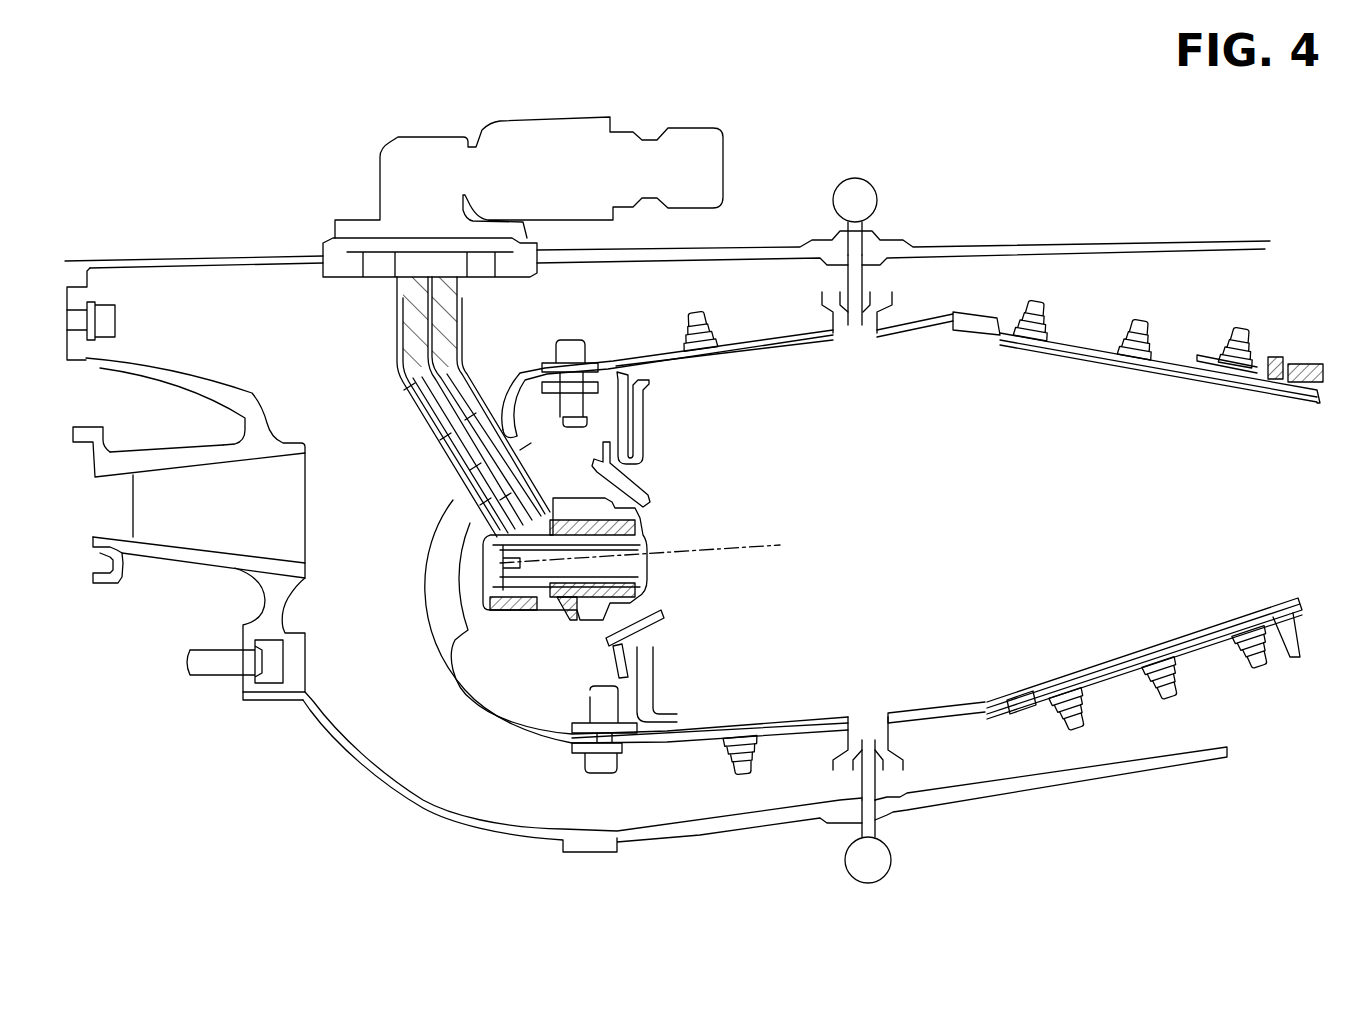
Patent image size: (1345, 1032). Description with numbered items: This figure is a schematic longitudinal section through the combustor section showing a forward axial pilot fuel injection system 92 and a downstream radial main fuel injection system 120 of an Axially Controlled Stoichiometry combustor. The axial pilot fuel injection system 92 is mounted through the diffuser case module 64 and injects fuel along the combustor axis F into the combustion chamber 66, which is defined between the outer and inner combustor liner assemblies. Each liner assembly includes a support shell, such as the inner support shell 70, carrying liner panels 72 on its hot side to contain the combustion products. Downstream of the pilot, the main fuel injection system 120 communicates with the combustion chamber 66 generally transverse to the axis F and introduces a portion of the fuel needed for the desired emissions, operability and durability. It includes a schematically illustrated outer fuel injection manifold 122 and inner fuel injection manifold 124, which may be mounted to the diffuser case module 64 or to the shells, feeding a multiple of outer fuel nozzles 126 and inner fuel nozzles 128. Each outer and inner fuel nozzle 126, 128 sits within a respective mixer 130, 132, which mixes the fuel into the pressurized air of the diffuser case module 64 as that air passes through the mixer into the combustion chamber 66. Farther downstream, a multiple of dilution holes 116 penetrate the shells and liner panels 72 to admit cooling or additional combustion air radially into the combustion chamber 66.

The diffuser case module 64 is at (1198, 243).
The combustion chamber 66 is at (1022, 470).
The support shell 70 is at (700, 756).
The liner panels 72 is at (680, 347).
The axial pilot fuel injection system 92 is at (344, 161).
The dilution holes 116 is at (995, 320).
The main fuel injection system 120 is at (926, 188).
The outer fuel injection manifold 122 is at (858, 178).
The inner fuel injection manifold 124 is at (893, 860).
The outer fuel nozzles 126 is at (860, 287).
The inner fuel nozzles 128 is at (872, 780).
The mixer 130 is at (832, 312).
The mixer 132 is at (833, 766).
The axis F is at (728, 563).